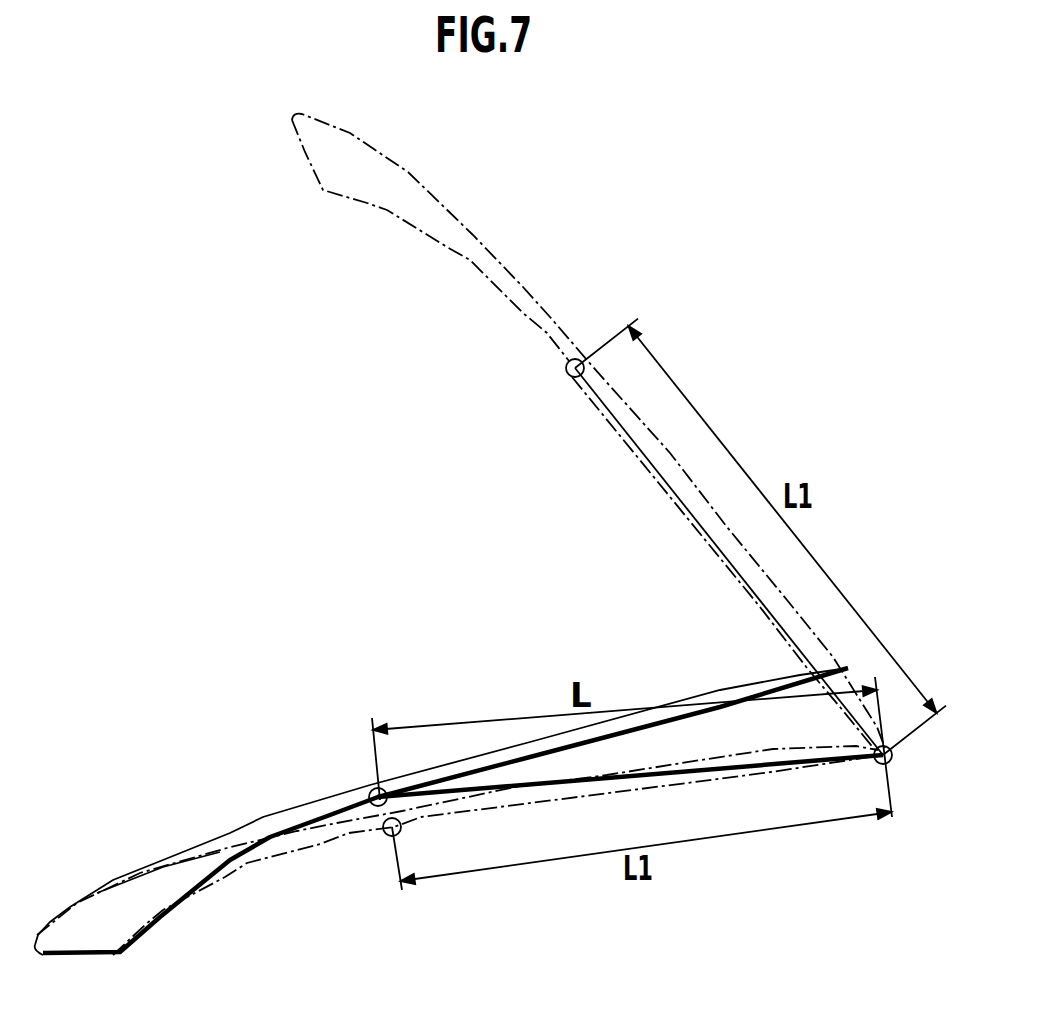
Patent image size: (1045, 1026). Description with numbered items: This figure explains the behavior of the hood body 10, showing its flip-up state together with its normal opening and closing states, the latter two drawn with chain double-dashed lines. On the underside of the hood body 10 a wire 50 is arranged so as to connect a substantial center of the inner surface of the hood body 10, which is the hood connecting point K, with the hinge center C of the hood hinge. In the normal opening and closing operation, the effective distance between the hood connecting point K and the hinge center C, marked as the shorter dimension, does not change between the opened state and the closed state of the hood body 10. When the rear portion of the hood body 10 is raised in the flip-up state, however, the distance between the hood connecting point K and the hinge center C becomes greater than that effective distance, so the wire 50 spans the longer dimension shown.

The hood body 10 is at (527, 288).
The wire 50 is at (457, 788).
The hood connecting point K is at (562, 371).
The hinge center C is at (892, 757).